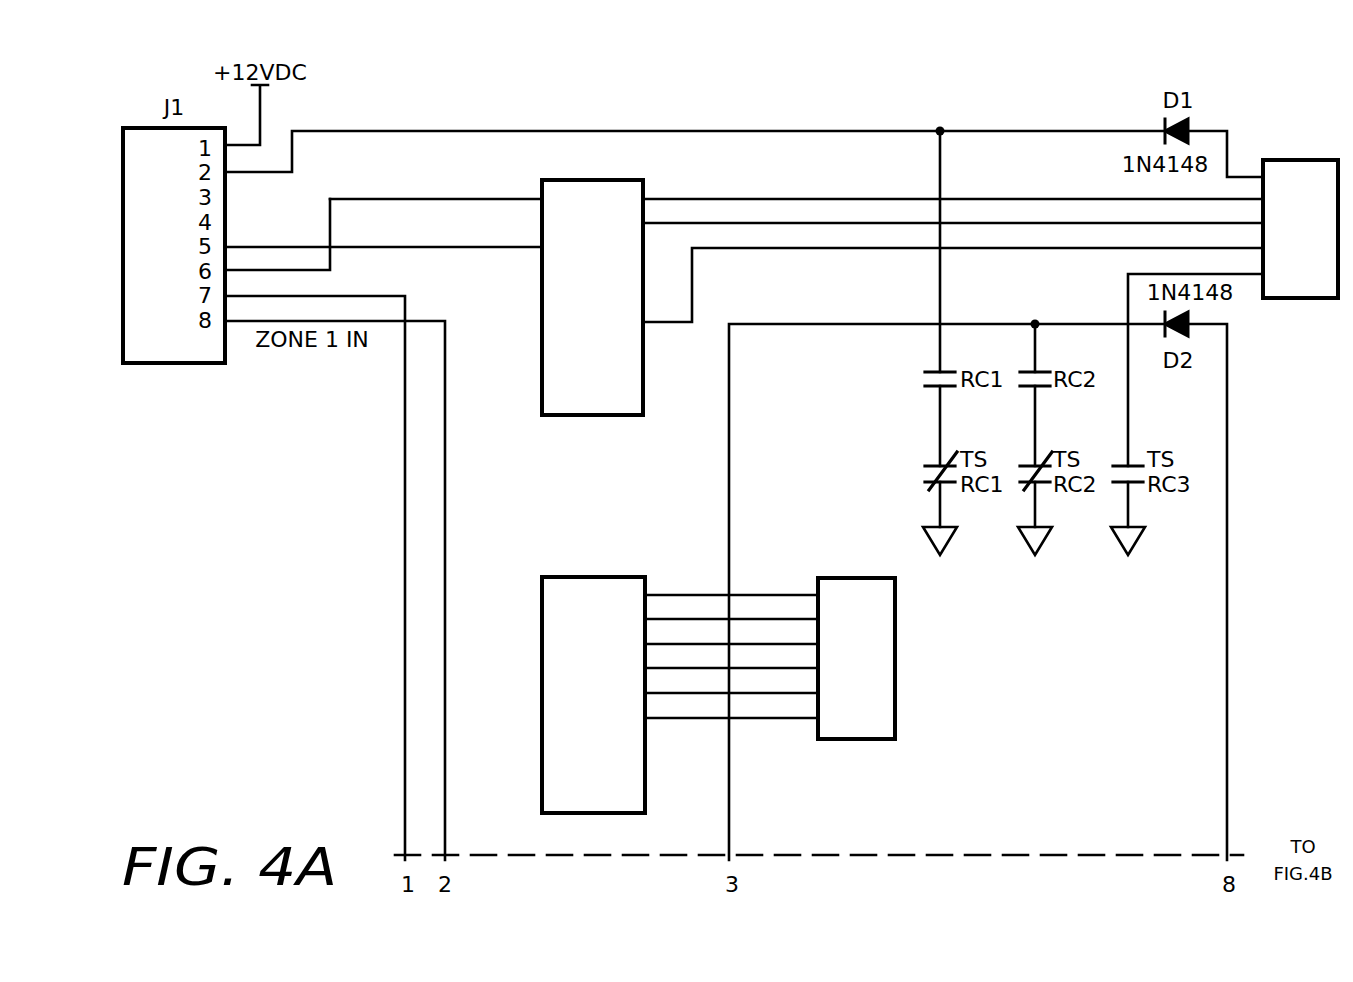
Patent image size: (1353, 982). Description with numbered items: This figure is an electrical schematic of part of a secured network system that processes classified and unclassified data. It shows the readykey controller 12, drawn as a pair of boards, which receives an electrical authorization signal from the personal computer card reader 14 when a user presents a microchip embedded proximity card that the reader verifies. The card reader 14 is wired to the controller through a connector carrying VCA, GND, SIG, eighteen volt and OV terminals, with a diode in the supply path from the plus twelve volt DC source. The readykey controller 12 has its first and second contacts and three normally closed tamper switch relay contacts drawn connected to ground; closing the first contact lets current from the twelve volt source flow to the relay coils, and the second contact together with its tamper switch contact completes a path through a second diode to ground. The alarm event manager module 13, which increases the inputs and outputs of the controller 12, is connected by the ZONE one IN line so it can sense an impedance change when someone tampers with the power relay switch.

The readykey controller 12 is at (556, 340).
The alarm event manager module 13 is at (826, 580).
The personal computer card reader 14 is at (1270, 166).